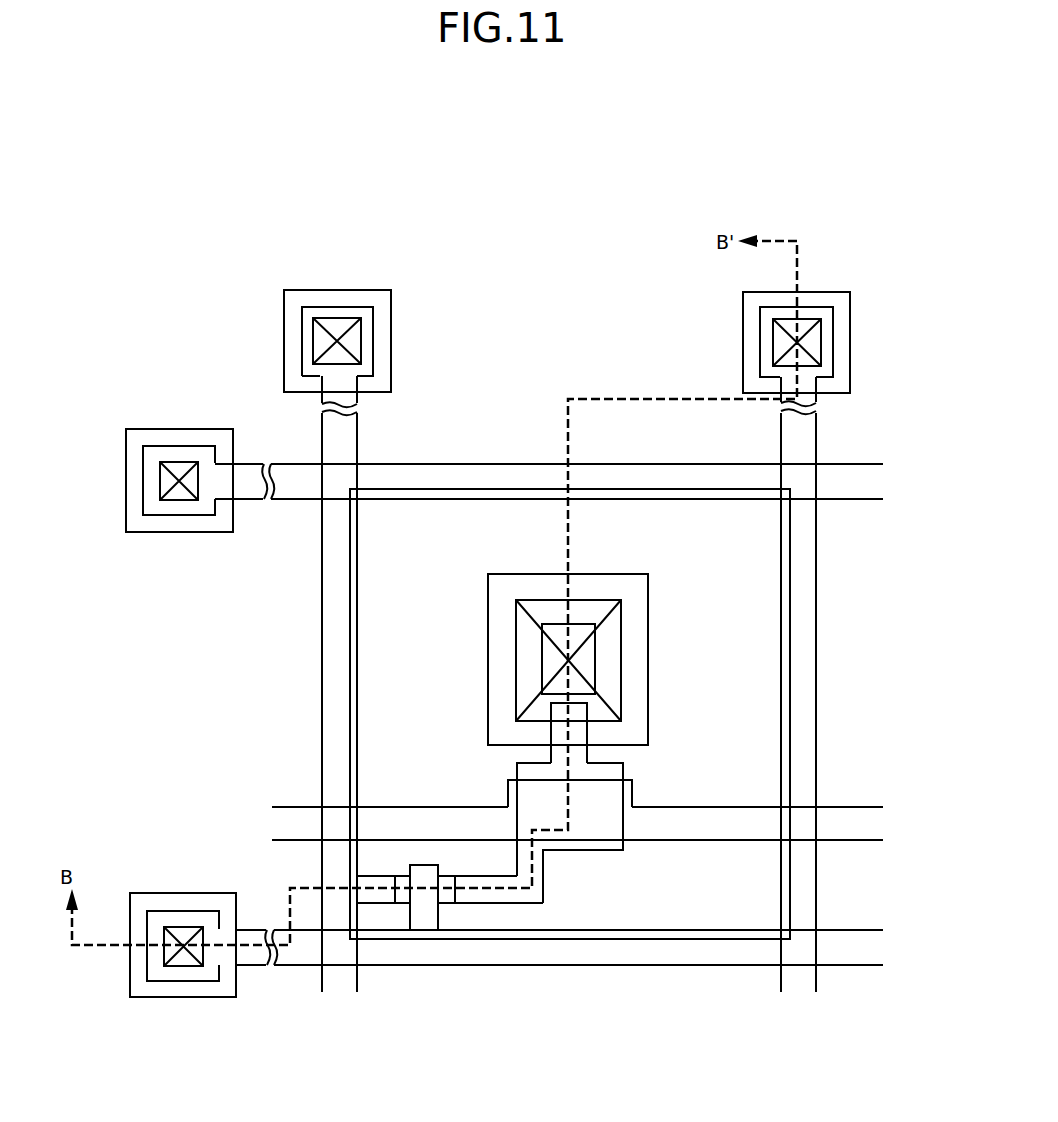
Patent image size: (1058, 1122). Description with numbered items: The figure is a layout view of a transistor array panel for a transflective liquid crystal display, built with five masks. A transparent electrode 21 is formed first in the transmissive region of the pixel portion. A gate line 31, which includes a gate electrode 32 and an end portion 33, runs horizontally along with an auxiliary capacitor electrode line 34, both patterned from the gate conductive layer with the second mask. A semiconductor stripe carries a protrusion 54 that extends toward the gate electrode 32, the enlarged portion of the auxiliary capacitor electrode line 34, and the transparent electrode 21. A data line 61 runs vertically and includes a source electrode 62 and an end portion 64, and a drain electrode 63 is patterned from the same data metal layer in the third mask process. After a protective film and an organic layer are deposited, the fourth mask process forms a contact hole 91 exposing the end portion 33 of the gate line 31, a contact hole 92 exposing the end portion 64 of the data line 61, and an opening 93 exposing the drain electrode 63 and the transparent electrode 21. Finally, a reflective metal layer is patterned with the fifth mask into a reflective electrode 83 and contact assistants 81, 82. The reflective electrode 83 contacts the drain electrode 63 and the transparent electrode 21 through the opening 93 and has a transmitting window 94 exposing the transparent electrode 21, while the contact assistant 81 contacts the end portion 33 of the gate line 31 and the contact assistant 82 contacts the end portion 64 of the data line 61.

The transparent electrode 21 is at (572, 659).
The gate line 31 is at (447, 488).
The gate electrode 32 is at (438, 917).
The end portion of gate line 33 is at (167, 981).
The auxiliary capacitor electrode line 34 is at (288, 840).
The protrusion of semiconductor stripe 54 is at (443, 872).
The data line 61 is at (322, 646).
The source electrode 62 is at (383, 904).
The drain electrode 63 is at (607, 852).
The end portion of data line 64 is at (834, 357).
The contact assistant 81 is at (203, 941).
The contact assistant 82 is at (809, 353).
The reflective electrode 83 is at (792, 600).
The contact hole 91 is at (197, 966).
The contact hole 92 is at (773, 340).
The opening 93 is at (622, 665).
The transmitting window 94 is at (542, 655).